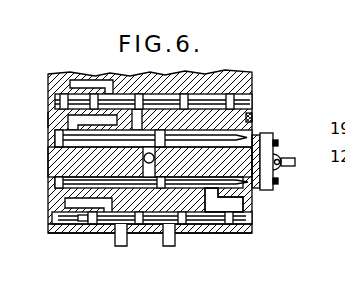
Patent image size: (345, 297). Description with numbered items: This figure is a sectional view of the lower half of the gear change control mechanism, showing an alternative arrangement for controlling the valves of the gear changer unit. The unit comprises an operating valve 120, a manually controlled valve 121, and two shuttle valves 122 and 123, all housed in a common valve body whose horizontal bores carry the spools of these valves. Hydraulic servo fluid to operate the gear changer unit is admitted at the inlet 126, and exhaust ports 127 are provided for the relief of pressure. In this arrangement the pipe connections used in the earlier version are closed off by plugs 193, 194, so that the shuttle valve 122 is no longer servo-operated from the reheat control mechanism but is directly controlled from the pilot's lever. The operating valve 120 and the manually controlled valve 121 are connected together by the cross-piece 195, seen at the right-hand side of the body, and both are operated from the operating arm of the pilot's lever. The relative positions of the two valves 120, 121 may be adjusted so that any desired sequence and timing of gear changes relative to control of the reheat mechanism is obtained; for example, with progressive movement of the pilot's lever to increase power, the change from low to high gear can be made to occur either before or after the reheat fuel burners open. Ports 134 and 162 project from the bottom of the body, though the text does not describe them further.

The operating valve 120 is at (250, 186).
The manually controlled valve 121 is at (248, 136).
The shuttle valve 122 is at (244, 104).
The shuttle valve 123 is at (220, 232).
The servo fluid inlet 126 is at (49, 158).
The exhaust ports 127 is at (55, 183).
The port 134 is at (175, 245).
The port 162 is at (118, 245).
The plug 193 is at (47, 121).
The plug 194 is at (252, 118).
The cross-piece 195 is at (283, 176).